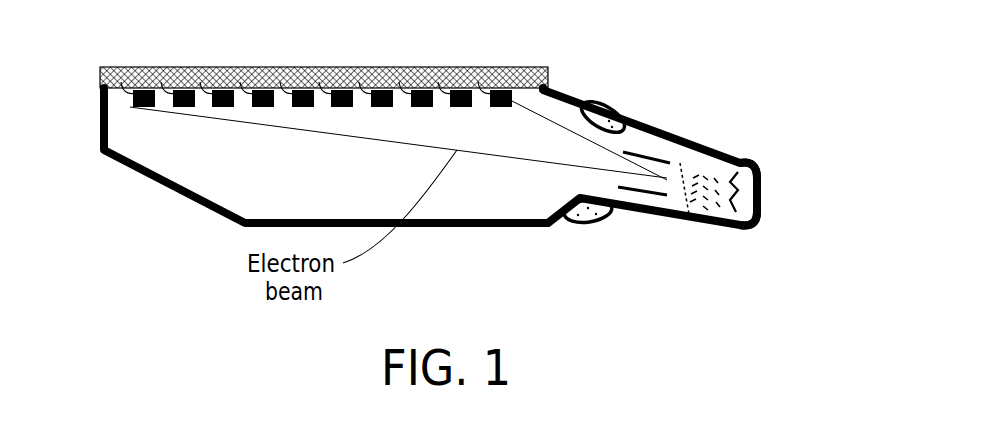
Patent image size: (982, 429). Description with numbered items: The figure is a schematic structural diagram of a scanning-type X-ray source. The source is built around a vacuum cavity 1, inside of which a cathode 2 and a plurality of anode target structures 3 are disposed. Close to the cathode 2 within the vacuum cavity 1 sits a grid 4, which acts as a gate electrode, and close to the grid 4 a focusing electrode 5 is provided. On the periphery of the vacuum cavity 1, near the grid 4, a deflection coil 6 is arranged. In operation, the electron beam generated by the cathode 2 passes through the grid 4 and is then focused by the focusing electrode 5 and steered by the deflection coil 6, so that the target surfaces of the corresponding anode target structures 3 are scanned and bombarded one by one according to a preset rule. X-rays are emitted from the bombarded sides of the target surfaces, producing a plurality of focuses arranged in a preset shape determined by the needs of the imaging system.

The vacuum cavity 1 is at (238, 221).
The cathode 2 is at (758, 214).
The anode target structures 3 is at (350, 72).
The grid 4 is at (695, 151).
The focusing electrode 5 is at (663, 137).
The deflection coil 6 is at (602, 214).